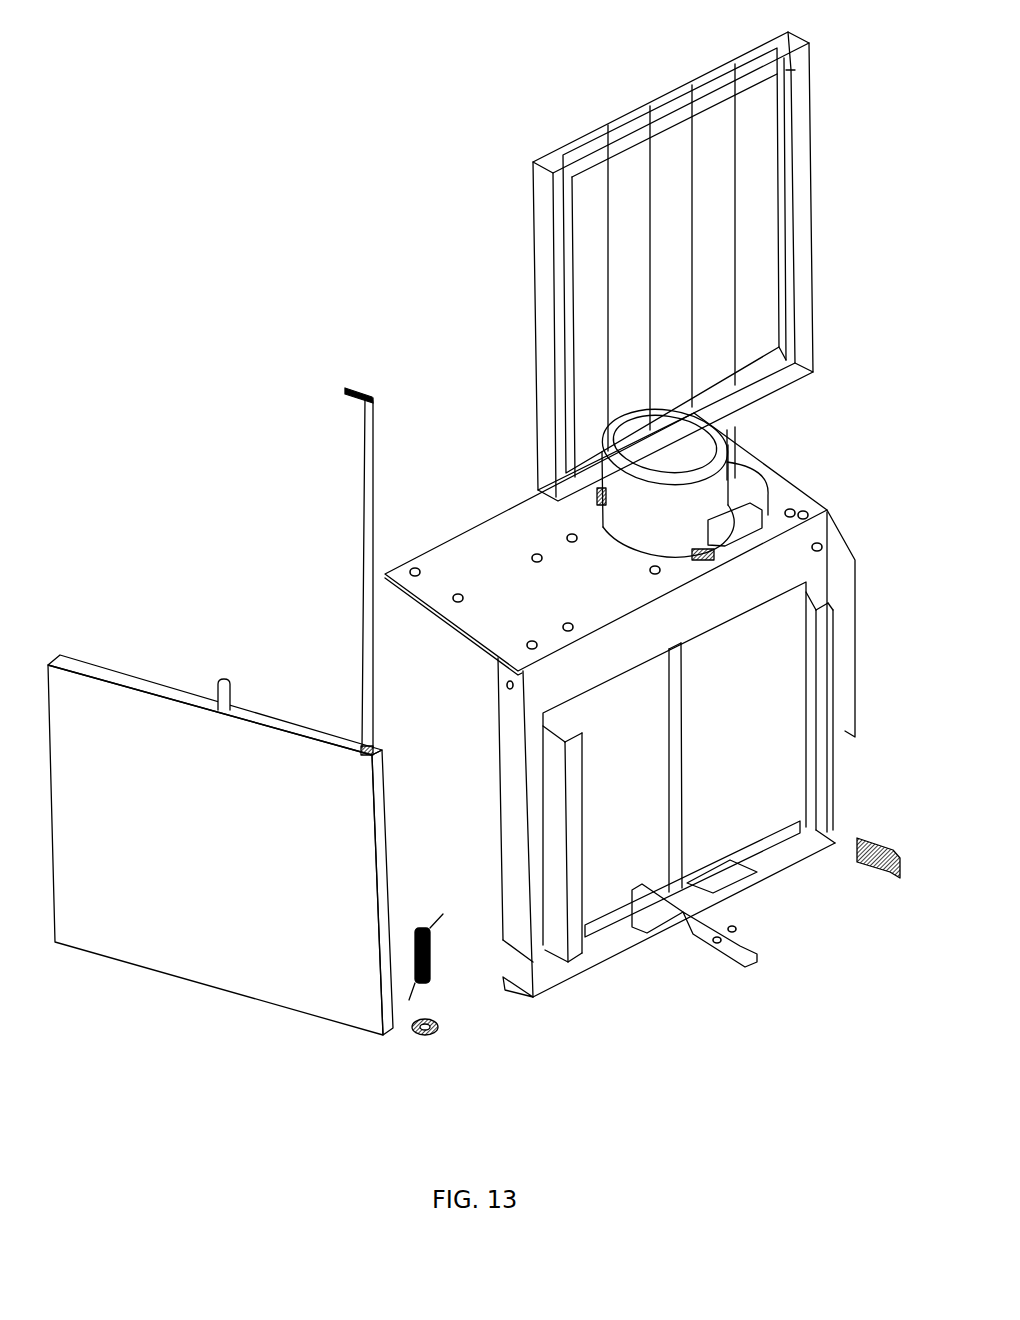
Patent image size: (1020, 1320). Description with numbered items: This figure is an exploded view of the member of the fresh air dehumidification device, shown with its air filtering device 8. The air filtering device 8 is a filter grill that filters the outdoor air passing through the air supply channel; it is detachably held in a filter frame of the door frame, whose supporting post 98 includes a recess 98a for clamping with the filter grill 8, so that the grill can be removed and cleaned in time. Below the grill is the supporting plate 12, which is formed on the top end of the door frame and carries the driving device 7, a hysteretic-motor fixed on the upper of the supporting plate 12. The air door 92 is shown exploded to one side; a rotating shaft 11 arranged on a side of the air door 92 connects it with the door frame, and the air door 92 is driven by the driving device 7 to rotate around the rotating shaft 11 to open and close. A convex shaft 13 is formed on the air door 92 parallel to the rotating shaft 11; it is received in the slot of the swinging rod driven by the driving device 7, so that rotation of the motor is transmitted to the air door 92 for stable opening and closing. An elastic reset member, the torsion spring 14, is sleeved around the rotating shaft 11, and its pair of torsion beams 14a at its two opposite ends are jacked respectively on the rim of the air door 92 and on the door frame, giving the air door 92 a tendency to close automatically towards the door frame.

The driving device 7 is at (697, 455).
The air filtering device 8 is at (780, 193).
The rotating shaft 11 is at (363, 443).
The supporting plate 12 is at (753, 542).
The convex shaft 13 is at (222, 683).
The torsion spring 14 is at (436, 985).
The torsion beams 14a is at (443, 912).
The air door 92 is at (312, 775).
The supporting post 98 is at (560, 855).
The recess 98a is at (800, 860).